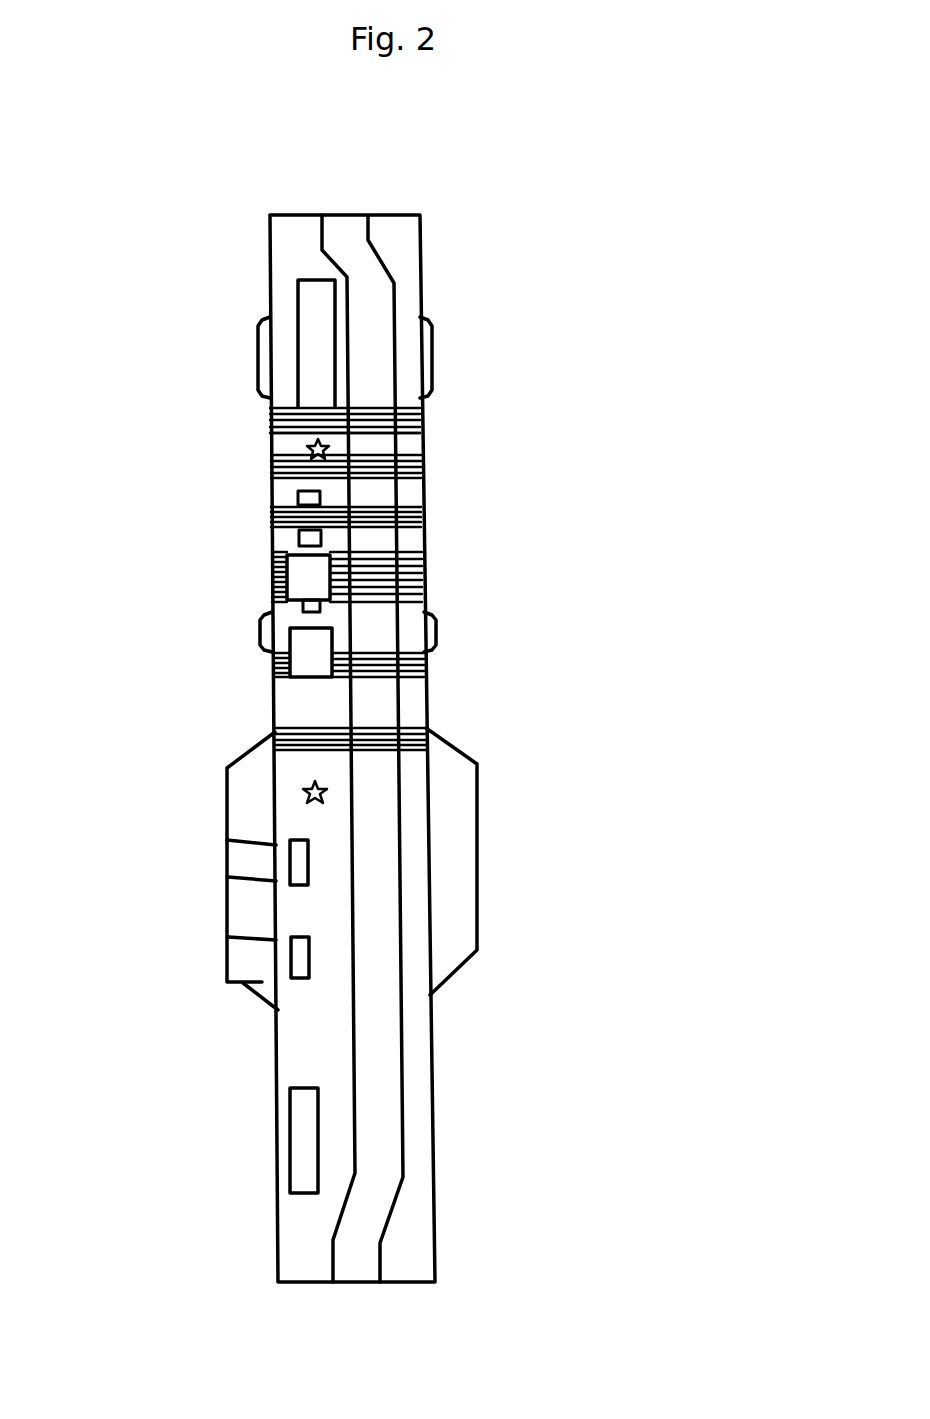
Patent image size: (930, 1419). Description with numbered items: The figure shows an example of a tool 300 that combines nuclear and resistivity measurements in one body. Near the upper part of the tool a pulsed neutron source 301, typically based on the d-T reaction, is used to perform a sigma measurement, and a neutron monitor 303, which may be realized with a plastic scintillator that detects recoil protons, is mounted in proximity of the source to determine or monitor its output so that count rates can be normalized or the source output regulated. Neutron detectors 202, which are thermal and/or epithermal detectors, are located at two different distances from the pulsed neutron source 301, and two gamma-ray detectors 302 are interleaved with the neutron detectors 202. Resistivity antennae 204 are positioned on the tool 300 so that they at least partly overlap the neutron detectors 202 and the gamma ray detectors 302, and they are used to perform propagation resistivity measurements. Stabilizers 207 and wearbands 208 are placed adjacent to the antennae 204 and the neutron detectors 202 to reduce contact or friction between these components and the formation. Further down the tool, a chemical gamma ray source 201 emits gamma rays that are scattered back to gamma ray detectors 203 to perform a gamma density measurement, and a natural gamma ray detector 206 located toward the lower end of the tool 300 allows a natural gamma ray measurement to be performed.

The tool 300 is at (462, 192).
The wearbands 208 is at (262, 340).
The resistivity antennae 204 is at (420, 418).
The pulsed neutron source 301 is at (275, 432).
The neutron monitor 303 is at (270, 456).
The neutron detectors 202 is at (275, 496).
The gamma-ray detectors 302 is at (273, 574).
The gamma ray source 201 is at (305, 787).
The stabilizers 207 is at (235, 792).
The gamma ray detectors 203 is at (290, 862).
The natural gamma ray detector 206 is at (290, 1140).